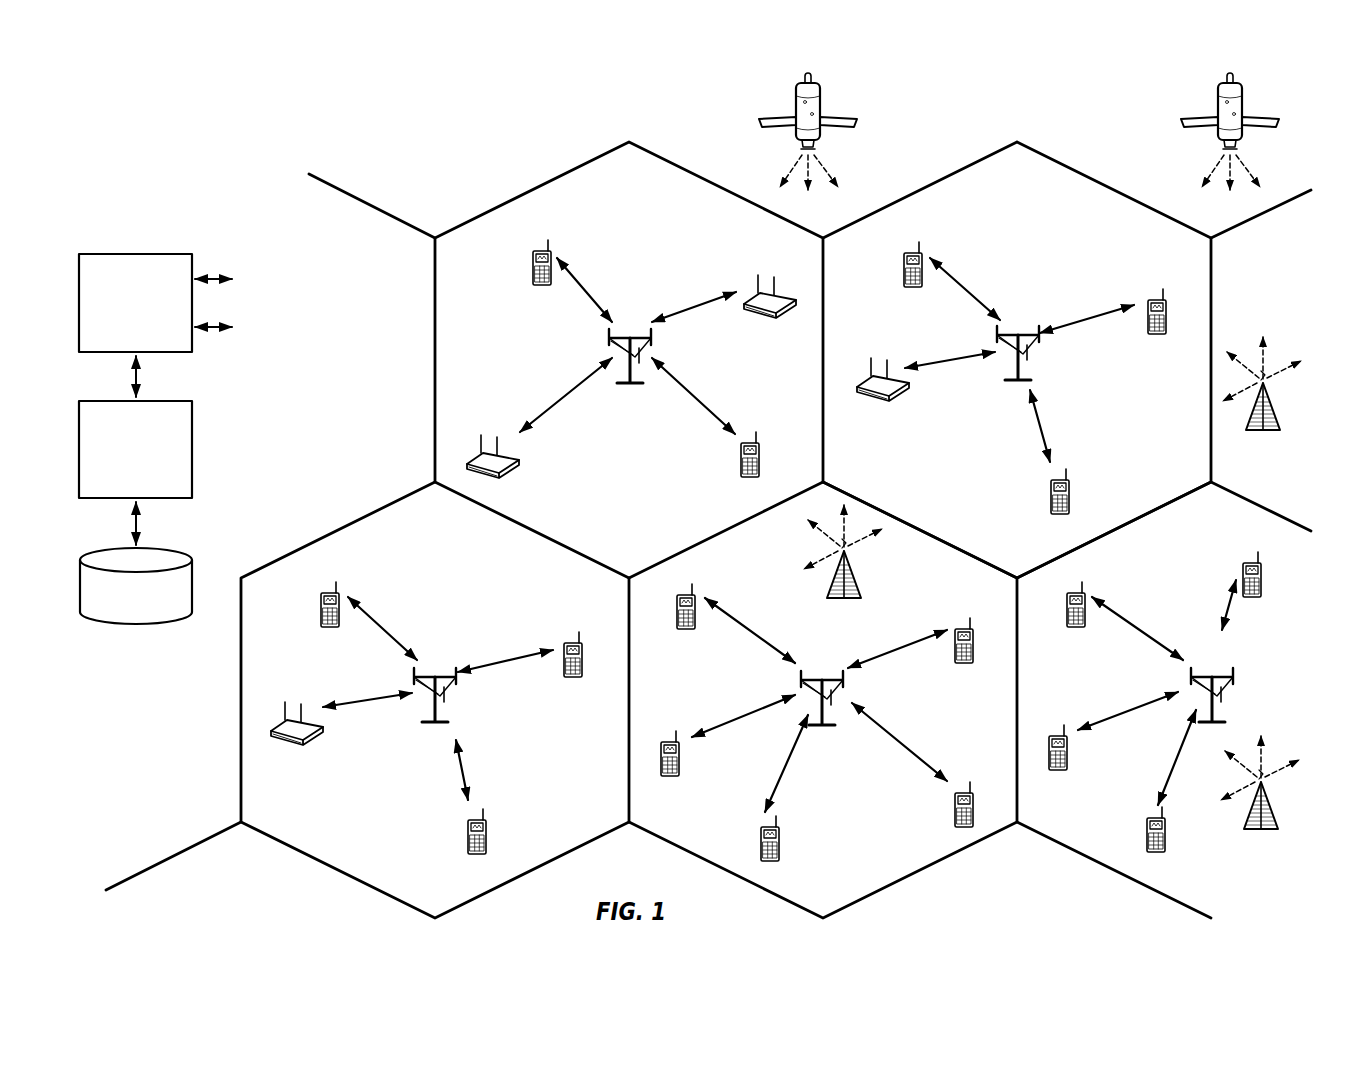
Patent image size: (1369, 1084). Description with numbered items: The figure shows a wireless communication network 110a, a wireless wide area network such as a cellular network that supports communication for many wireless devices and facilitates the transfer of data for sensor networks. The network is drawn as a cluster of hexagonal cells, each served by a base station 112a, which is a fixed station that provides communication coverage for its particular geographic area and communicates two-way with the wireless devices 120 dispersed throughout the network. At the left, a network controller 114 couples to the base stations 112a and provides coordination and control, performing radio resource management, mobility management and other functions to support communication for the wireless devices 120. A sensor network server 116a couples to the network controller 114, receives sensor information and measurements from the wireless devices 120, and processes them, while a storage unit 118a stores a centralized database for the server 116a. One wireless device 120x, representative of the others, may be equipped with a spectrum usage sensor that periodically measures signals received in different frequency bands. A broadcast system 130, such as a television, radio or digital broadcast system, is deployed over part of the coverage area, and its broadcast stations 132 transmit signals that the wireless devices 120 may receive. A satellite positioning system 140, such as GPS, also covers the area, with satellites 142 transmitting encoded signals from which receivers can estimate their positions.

The wireless communication network 110a is at (430, 186).
The base station 112a is at (624, 338).
The network controller 114 is at (136, 242).
The sensor network server 116a is at (165, 388).
The storage unit 118a is at (166, 533).
The wireless device 120 is at (533, 262).
The wireless device 120x is at (577, 655).
The broadcast system 130 is at (1266, 320).
The broadcast station 132 is at (1298, 408).
The satellite positioning system 140 is at (744, 112).
The satellite 142 is at (830, 118).